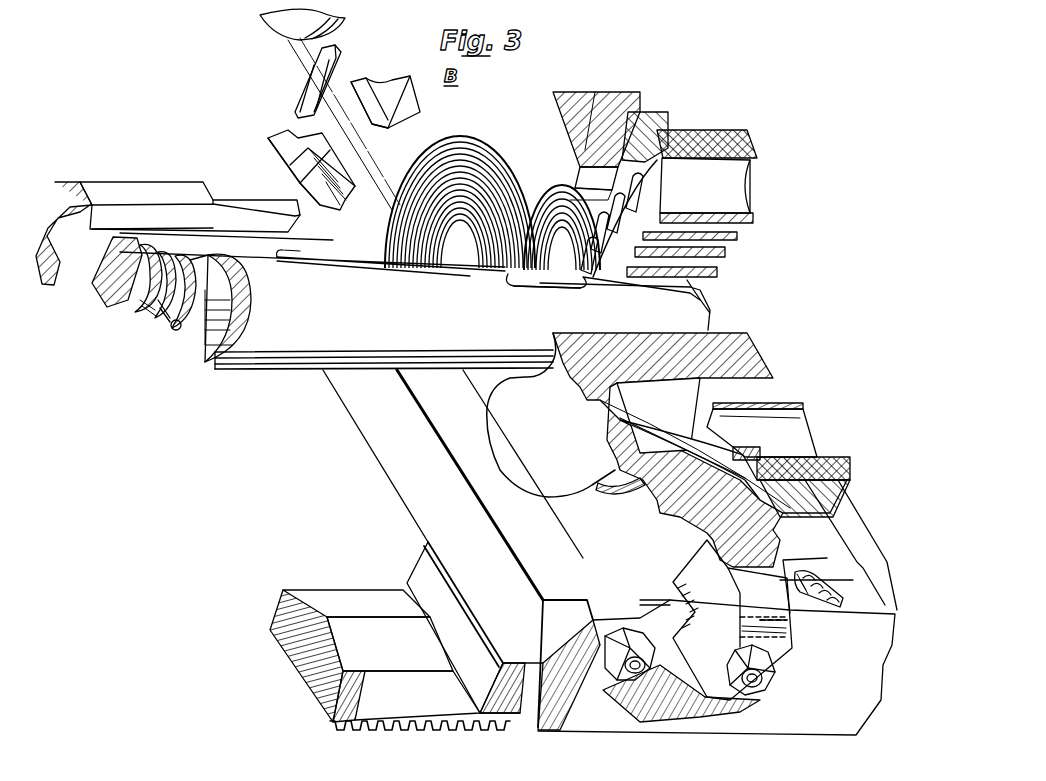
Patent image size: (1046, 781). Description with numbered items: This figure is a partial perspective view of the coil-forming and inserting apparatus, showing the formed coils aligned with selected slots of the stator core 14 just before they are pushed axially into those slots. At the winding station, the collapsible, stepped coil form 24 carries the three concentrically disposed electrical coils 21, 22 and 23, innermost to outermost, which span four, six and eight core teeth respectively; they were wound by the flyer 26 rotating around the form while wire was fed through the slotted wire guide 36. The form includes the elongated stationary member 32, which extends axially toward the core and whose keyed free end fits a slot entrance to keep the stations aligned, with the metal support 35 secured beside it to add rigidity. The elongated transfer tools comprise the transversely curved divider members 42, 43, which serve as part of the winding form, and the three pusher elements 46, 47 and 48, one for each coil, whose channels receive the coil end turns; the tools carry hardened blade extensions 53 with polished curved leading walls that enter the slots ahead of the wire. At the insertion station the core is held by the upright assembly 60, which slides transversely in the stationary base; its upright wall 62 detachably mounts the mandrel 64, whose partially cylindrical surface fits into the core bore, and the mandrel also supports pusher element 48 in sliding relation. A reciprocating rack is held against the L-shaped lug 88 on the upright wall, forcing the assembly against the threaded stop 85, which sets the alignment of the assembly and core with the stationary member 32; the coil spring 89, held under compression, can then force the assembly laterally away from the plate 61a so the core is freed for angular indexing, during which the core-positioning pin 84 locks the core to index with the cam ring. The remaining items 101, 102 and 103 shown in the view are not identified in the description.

The stator core 14 is at (752, 150).
The innermost electrical coil 21 is at (577, 270).
The intermediate electrical coil 22 is at (535, 212).
The outermost electrical coil 23 is at (466, 155).
The coil form 24 is at (135, 181).
The flyer 26 is at (258, 22).
The stationary member 32 is at (132, 302).
The metal support 35 is at (102, 290).
The wire guide 36 is at (303, 90).
The divider member 42 is at (168, 328).
The divider member 43 is at (204, 345).
The pusher element 46 is at (150, 310).
The pusher element 47 is at (176, 332).
The pusher element 48 is at (243, 370).
The blade extension 53 is at (332, 265).
The upright assembly 60 is at (566, 412).
The plate 61a is at (832, 710).
The upright wall 62 is at (618, 445).
The mandrel 64 is at (748, 360).
The core-positioning pin 84 is at (750, 455).
The threaded stop 85 is at (612, 688).
The L-shaped lug 88 is at (775, 648).
The coil spring 89 is at (838, 600).
The direction arrow 101 is at (368, 166).
The pawl block 102 is at (398, 105).
The rack block 103 is at (344, 200).